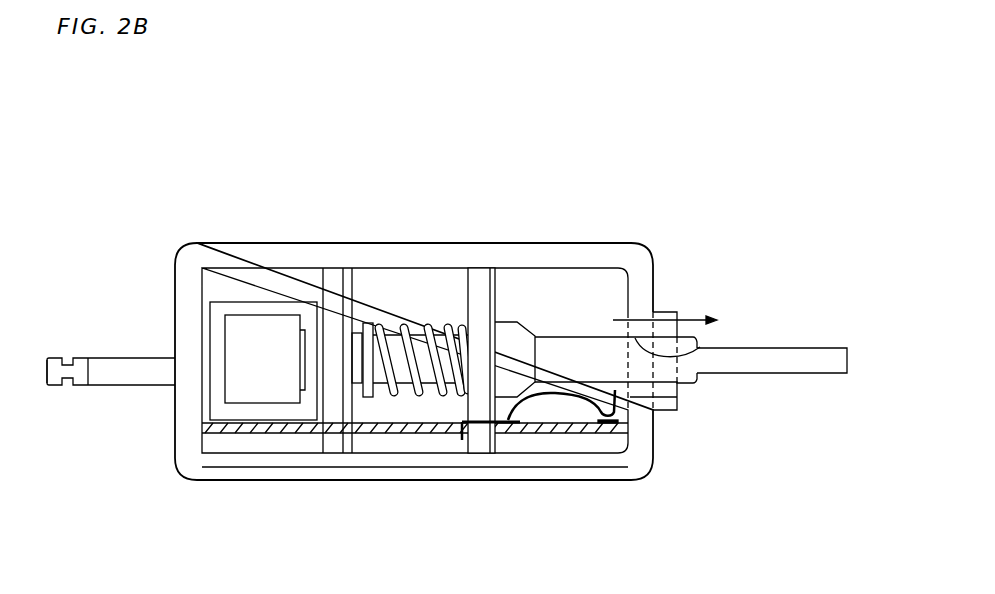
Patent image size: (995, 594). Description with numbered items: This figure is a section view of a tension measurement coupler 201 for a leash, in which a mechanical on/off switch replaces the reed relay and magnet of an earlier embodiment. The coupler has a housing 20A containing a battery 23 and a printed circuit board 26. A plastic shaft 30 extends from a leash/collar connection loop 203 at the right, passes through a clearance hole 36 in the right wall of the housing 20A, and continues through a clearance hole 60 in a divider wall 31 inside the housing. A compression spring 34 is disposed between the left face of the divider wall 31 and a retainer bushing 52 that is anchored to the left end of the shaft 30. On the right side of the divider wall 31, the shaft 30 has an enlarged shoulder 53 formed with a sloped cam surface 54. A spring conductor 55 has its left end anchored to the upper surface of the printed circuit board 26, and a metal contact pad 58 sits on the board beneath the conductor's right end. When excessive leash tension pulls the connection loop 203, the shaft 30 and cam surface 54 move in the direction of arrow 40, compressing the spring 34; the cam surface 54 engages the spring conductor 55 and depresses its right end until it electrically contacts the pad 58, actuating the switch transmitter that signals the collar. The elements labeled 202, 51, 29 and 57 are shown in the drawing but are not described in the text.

The housing 20A is at (467, 241).
The tension measurement coupler 201 is at (158, 508).
The input shaft 202 is at (57, 358).
The leash/collar connection loop 203 is at (828, 348).
The battery 23 is at (258, 327).
The partition wall 51 is at (337, 415).
The printed circuit board 26 is at (587, 427).
The spring seat 29 is at (357, 333).
The retainer bushing 52 is at (370, 323).
The compression spring 34 is at (404, 328).
The divider wall 31 is at (487, 275).
The clearance hole 60 is at (482, 352).
The enlarged shoulder 53 is at (518, 338).
The plastic shaft 30 is at (588, 340).
The boss 57 is at (680, 397).
The clearance hole 36 is at (700, 347).
The arrow 40 is at (690, 319).
The cam surface 54 is at (506, 422).
The spring conductor 55 is at (557, 393).
The metal contact pad 58 is at (607, 423).